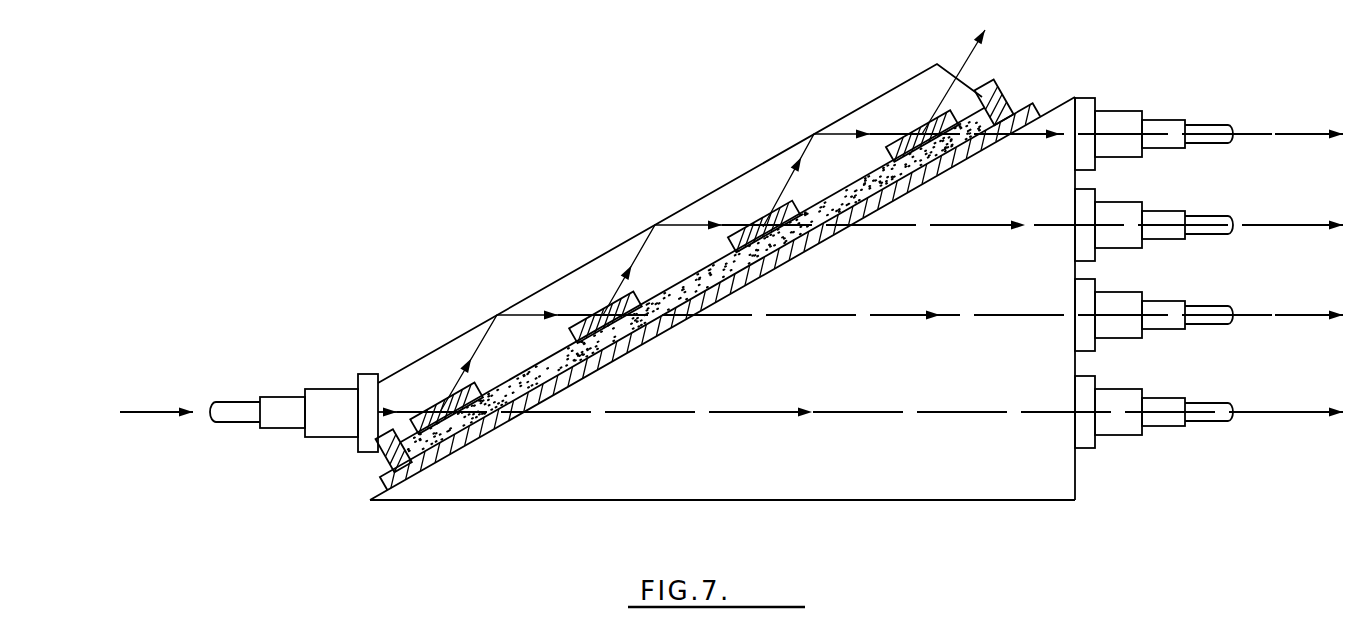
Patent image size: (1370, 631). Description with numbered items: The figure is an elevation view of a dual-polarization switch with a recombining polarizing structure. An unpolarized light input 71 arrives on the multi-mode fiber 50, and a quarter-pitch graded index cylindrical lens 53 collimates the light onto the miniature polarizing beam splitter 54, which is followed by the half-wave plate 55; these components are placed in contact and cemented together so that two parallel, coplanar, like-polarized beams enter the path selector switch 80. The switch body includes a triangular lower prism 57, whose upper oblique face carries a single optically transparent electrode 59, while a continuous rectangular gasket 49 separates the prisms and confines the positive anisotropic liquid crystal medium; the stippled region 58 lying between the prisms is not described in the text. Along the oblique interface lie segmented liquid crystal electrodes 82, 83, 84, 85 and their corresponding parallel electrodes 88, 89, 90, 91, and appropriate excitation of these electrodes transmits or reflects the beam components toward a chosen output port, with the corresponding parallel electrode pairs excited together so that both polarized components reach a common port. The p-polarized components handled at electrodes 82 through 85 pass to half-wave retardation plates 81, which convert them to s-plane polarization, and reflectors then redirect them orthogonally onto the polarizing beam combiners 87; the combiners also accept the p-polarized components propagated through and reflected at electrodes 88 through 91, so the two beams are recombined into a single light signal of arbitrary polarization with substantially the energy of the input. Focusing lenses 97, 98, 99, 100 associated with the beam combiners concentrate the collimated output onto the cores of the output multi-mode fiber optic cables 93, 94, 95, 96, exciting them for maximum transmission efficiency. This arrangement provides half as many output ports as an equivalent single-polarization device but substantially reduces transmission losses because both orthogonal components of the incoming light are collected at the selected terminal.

The rectangular gasket 49 is at (383, 470).
The multi-mode fiber 50 is at (237, 424).
The quarter-pitch graded index cylindrical lens 53 is at (280, 397).
The polarizing beam splitter 54 is at (325, 389).
The half-wave plate 55 is at (370, 374).
The lower prism 57 is at (553, 492).
The light guide core 58 is at (935, 177).
The optically transparent electrode 59 is at (650, 340).
The unpolarized light input 71 is at (152, 416).
The path selector switch 80 is at (917, 535).
The half-wave retardation plates 81 is at (1087, 98).
The liquid crystal electrode 82 is at (440, 410).
The liquid crystal electrode 83 is at (603, 314).
The liquid crystal electrode 84 is at (763, 227).
The liquid crystal electrode 85 is at (922, 133).
The polarizing beam combiners 87 is at (1120, 113).
The liquid crystal electrode 88 is at (498, 315).
The liquid crystal electrode 89 is at (655, 225).
The liquid crystal electrode 90 is at (813, 135).
The liquid crystal electrode 91 is at (957, 73).
The multi-mode fiber optic cable 93 is at (1228, 124).
The multi-mode fiber optic cable 94 is at (1230, 214).
The multi-mode fiber optic cable 95 is at (1230, 306).
The multi-mode fiber optic cable 96 is at (1230, 402).
The focusing lens 97 is at (1183, 122).
The focusing lens 98 is at (1175, 208).
The focusing lens 99 is at (1175, 302).
The focusing lens 100 is at (1172, 393).